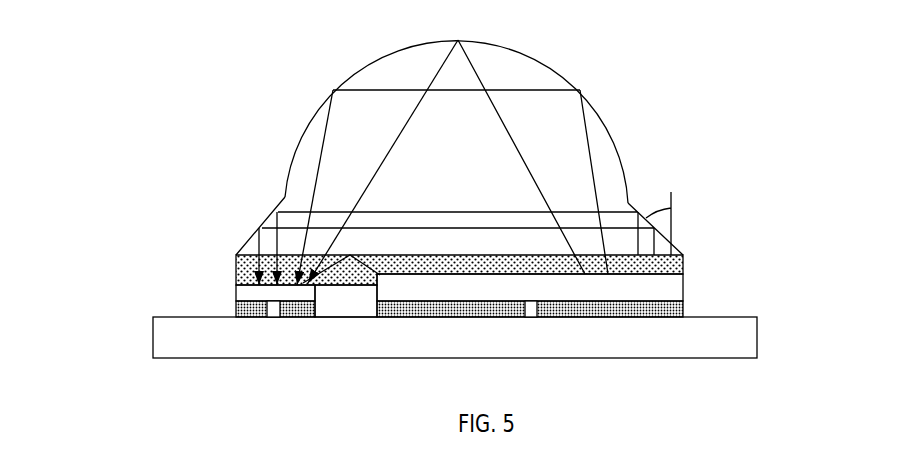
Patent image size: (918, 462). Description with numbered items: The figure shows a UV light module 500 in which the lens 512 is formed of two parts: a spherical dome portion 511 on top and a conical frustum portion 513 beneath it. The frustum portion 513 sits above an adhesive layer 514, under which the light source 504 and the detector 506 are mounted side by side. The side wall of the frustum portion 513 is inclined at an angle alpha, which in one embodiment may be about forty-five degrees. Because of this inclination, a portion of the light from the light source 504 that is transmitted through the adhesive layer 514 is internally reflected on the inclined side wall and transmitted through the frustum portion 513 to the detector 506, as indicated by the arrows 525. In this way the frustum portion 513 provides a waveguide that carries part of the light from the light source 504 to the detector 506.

The UV light module 500 is at (85, 33).
The light source 504 is at (683, 288).
The detector 506 is at (236, 297).
The spherical dome portion 511 is at (262, 47).
The lens 512 is at (643, 55).
The conical frustum portion 513 is at (228, 208).
The adhesive layer 514 is at (683, 256).
The arrows 525 is at (487, 213).